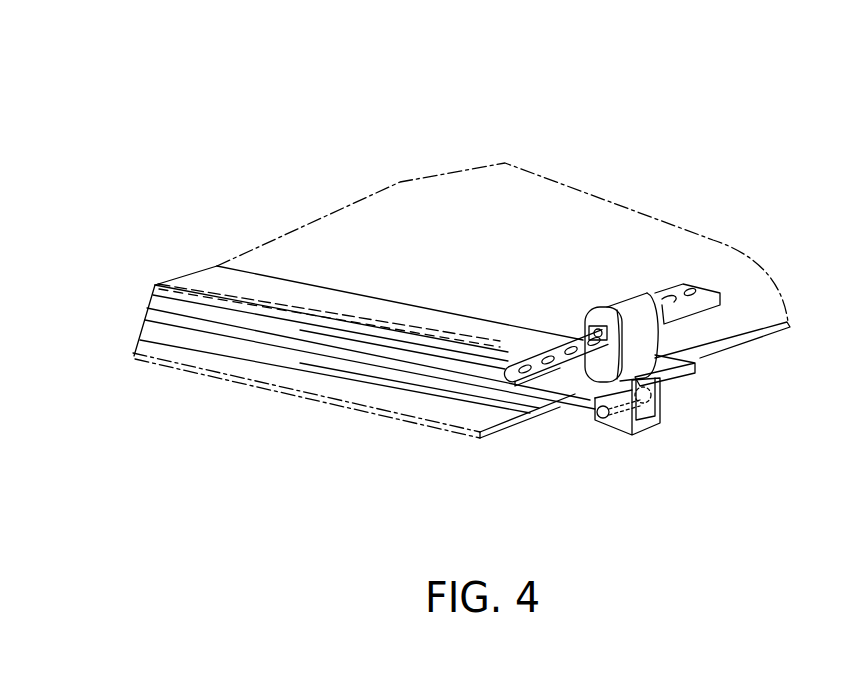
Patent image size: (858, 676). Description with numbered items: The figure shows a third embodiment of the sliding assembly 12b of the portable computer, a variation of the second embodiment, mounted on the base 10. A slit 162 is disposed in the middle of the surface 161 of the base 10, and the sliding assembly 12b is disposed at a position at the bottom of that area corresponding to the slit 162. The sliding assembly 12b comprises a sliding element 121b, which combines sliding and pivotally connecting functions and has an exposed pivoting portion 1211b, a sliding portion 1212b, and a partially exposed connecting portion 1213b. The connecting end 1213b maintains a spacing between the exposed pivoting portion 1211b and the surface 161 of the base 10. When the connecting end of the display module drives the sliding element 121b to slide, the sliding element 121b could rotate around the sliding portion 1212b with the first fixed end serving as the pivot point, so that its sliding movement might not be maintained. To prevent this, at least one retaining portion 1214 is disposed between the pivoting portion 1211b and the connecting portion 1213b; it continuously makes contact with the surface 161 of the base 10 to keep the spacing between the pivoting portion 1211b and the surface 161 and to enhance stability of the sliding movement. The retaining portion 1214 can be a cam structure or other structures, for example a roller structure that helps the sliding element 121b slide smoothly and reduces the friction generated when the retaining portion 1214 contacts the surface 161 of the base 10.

The base 10 is at (262, 405).
The sliding assembly 12b is at (585, 102).
The sliding element 121b is at (714, 256).
The pivoting portion 1211b is at (628, 306).
The sliding portion 1212b is at (603, 416).
The connecting portion 1213b is at (652, 380).
The retaining portion 1214 is at (656, 356).
The surface 161 is at (453, 416).
The slit 162 is at (333, 320).